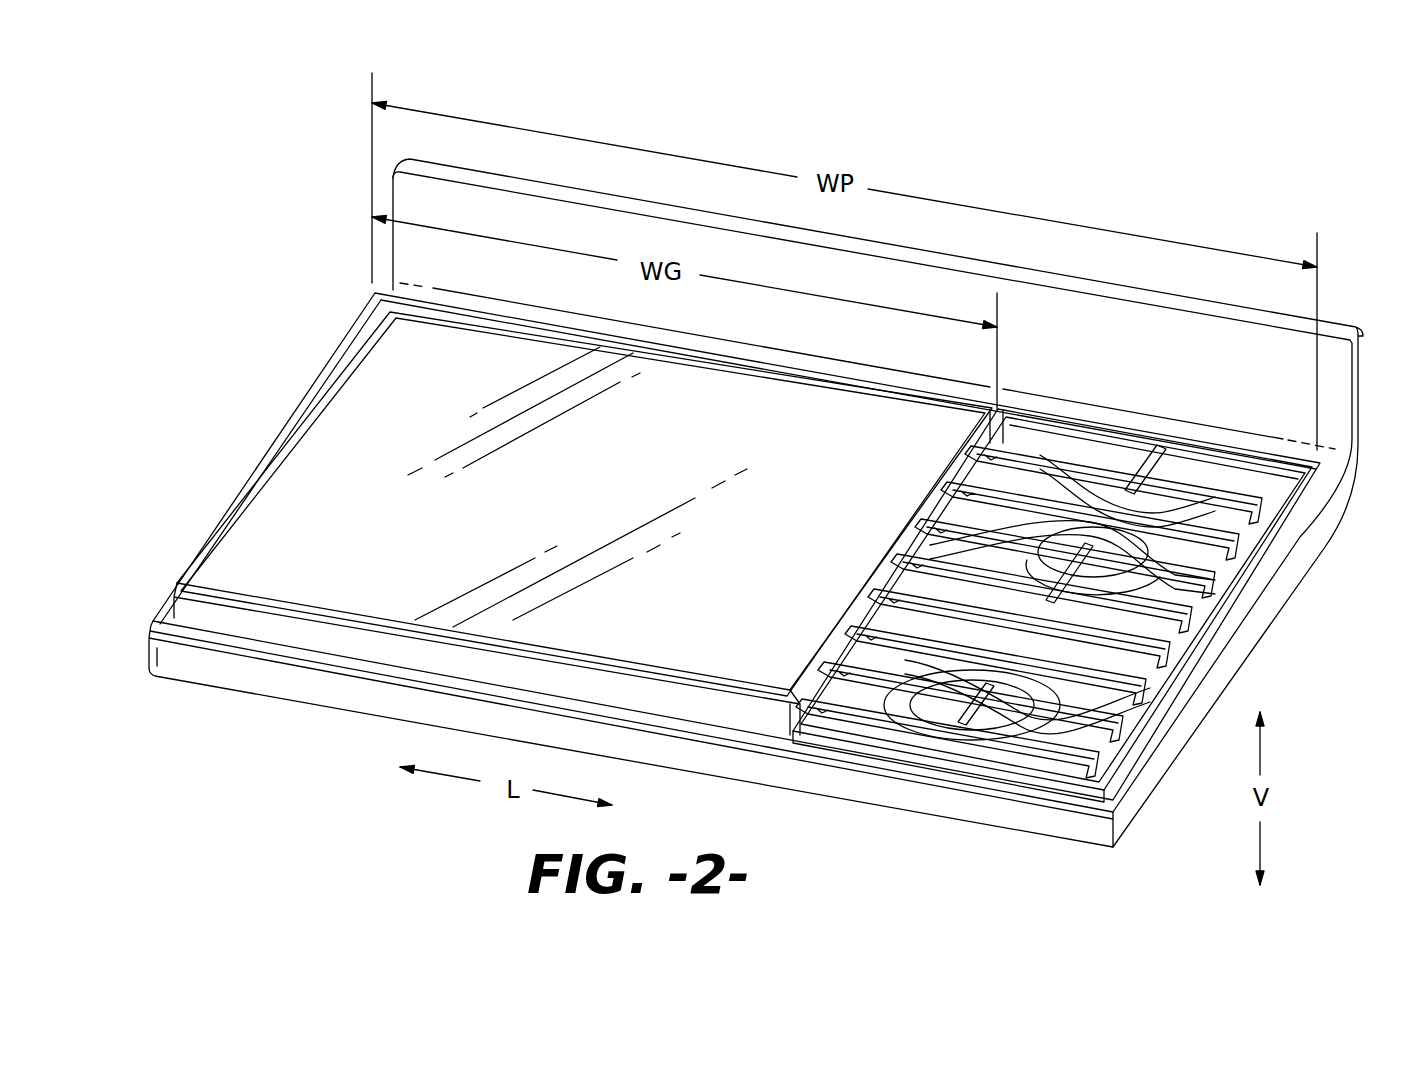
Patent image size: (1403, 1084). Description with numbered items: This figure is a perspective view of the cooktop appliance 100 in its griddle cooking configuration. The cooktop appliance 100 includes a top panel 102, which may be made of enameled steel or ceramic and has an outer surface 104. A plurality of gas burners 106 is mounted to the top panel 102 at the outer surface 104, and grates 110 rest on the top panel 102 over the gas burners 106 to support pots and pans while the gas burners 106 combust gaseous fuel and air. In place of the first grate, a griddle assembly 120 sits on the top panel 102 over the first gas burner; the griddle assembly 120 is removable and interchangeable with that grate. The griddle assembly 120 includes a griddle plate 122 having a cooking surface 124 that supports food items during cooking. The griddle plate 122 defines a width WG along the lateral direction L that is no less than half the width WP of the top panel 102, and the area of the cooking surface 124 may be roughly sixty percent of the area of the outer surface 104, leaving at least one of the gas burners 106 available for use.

The cooktop appliance 100 is at (253, 267).
The top panel 102 is at (1273, 600).
The outer surface 104 is at (868, 727).
The gas burners 106 is at (1010, 703).
The grates 110 is at (1148, 438).
The griddle assembly 120 is at (263, 625).
The griddle plate 122 is at (342, 462).
The cooking surface 124 is at (423, 593).